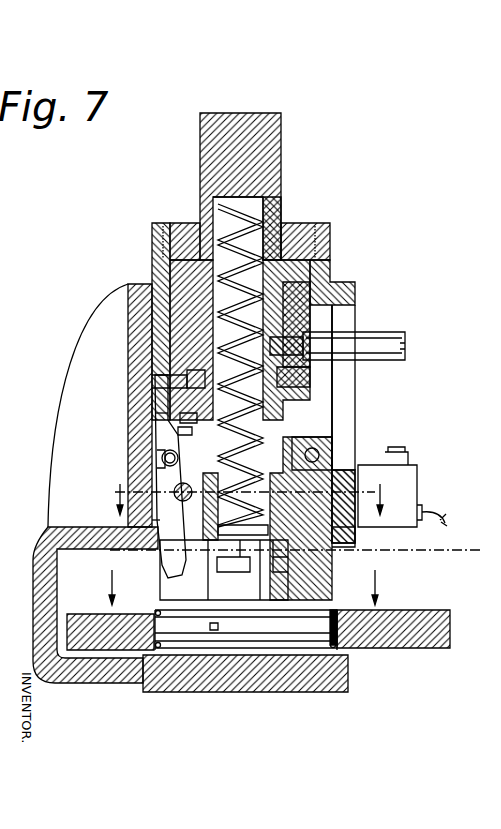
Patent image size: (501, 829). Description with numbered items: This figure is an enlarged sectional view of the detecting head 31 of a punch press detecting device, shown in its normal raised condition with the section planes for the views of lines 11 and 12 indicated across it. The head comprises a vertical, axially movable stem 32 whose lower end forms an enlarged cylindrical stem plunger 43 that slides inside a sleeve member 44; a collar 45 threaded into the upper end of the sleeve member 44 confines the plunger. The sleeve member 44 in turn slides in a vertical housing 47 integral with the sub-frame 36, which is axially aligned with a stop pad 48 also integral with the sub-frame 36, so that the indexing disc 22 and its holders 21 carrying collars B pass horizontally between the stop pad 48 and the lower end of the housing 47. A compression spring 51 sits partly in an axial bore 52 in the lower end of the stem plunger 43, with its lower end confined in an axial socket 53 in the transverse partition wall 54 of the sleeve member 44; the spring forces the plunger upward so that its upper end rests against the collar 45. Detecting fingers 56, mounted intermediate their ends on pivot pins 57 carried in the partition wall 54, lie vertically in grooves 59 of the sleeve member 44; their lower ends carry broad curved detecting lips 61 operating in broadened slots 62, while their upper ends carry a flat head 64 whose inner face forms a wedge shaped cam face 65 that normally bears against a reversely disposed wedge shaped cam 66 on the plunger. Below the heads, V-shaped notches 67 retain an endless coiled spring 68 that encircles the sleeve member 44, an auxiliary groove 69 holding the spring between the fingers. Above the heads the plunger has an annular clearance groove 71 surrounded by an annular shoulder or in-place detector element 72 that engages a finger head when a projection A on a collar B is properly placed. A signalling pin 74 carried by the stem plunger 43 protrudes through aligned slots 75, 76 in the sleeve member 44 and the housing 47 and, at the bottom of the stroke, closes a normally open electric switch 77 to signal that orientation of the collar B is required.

The detecting head 31 is at (284, 153).
The stem 32 is at (200, 147).
The compression spring 51 is at (206, 212).
The axial bore 52 is at (208, 216).
The collar 45 is at (298, 236).
The stem plunger 43 is at (298, 268).
The sleeve member 44 is at (330, 276).
The housing 47 is at (140, 313).
The sub-frame 36 is at (50, 545).
The grooves 59 is at (150, 521).
The stop pad 48 is at (326, 668).
The disc 22 is at (428, 638).
The holder 21 is at (342, 628).
The projection A is at (218, 627).
The collar B is at (290, 630).
The axial socket 53 is at (266, 486).
The partition wall 54 is at (328, 523).
The slots 62 is at (215, 592).
The detecting lips 61 is at (218, 572).
The pivot pins 57 is at (188, 485).
The V-shaped notches 67 is at (162, 453).
The detecting fingers 56 is at (200, 458).
The clearance groove 71 is at (186, 370).
The in-place detector element 72 is at (178, 385).
The wedge shaped cam 66 is at (192, 405).
The flat head 64 is at (165, 414).
The cam face 65 is at (186, 427).
The signalling pin 74 is at (378, 336).
The slot 75 is at (332, 376).
The slot 76 is at (355, 390).
The auxiliary groove 69 is at (318, 447).
The endless coiled spring 68 is at (322, 455).
The electric switch 77 is at (400, 490).
The section line 11- 11 is at (249, 492).
The section line 12- 12 is at (281, 577).